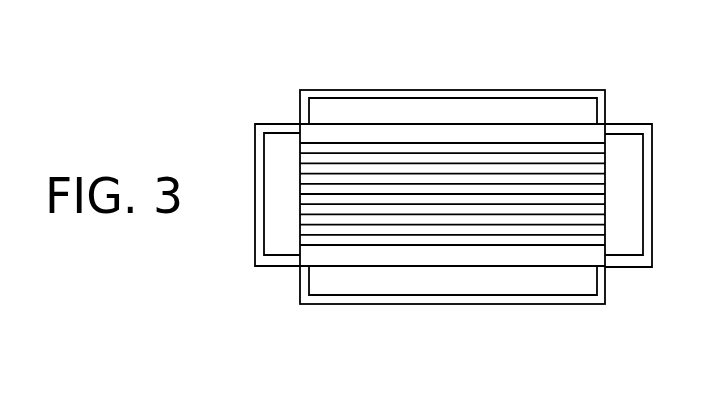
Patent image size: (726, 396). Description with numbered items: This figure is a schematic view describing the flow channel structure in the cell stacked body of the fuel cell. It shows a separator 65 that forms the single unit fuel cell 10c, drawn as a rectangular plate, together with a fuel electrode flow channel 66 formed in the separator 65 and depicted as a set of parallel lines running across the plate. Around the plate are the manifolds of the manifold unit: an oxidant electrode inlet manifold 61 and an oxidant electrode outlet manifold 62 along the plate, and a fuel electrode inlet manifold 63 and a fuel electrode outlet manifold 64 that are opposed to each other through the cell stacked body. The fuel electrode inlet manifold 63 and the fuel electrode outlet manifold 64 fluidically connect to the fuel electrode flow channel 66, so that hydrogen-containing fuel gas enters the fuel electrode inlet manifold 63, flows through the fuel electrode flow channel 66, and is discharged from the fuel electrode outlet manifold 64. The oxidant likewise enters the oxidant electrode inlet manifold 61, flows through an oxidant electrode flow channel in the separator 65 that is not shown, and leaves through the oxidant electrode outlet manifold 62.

The oxidant electrode inlet manifold 61 is at (460, 285).
The oxidant electrode outlet manifold 62 is at (458, 108).
The fuel electrode inlet manifold 63 is at (283, 152).
The fuel electrode outlet manifold 64 is at (615, 155).
The separator 65 is at (356, 134).
The single unit fuel cell 10c is at (452, 248).
The fuel electrode flow channel 66 is at (465, 243).